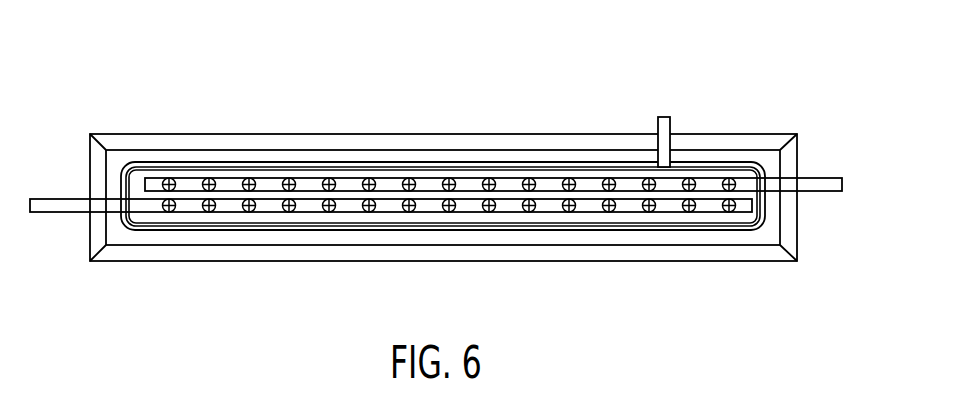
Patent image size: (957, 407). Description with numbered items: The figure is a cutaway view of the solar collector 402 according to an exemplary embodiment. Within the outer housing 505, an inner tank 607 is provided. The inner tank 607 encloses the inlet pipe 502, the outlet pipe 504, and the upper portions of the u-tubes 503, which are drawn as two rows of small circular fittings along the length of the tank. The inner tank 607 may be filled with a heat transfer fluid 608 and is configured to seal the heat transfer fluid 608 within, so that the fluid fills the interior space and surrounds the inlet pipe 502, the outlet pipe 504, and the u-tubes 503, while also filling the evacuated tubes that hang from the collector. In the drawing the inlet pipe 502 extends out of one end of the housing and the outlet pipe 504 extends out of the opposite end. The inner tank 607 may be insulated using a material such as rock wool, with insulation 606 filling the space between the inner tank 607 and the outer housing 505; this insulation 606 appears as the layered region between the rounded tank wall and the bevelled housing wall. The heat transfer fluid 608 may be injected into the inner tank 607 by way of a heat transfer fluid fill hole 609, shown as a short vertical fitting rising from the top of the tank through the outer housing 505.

The solar collector 402 is at (157, 62).
The inlet pipe 502 is at (822, 179).
The u-tubes 503 is at (181, 179).
The outlet pipe 504 is at (70, 199).
The outer housing 505 is at (237, 262).
The insulation 606 is at (355, 231).
The inner tank 607 is at (505, 227).
The heat transfer fluid 608 is at (588, 213).
The heat transfer fluid fill hole 609 is at (658, 127).